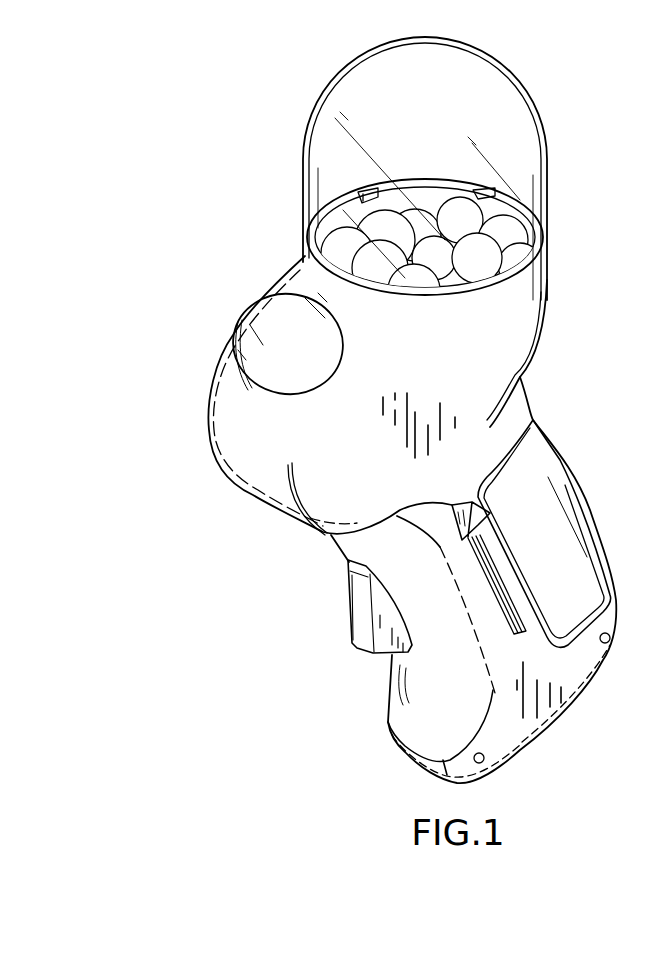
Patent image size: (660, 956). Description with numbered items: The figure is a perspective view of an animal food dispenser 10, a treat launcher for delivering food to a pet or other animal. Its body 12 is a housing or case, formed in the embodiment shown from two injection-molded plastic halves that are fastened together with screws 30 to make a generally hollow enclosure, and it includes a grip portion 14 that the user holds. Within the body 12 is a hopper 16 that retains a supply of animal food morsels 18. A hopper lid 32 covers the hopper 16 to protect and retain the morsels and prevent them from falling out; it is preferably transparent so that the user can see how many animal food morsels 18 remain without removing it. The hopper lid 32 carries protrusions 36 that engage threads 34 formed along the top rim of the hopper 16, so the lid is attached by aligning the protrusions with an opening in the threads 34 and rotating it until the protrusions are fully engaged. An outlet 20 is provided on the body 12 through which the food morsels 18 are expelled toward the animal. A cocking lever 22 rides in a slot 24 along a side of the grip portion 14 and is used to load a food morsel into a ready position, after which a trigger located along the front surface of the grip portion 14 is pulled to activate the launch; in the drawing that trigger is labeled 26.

The animal food dispenser 10 is at (348, 698).
The body 12 is at (538, 330).
The grip portion 14 is at (537, 663).
The hopper 16 is at (437, 196).
The animal food morsels 18 is at (386, 281).
The outlet 20 is at (234, 365).
The cocking lever 22 is at (470, 503).
The slot 24 is at (490, 563).
The trigger 26 is at (353, 627).
The screws 30 is at (612, 640).
The hopper lid 32 is at (527, 87).
The threads 34 is at (357, 207).
The protrusions 36 is at (372, 197).